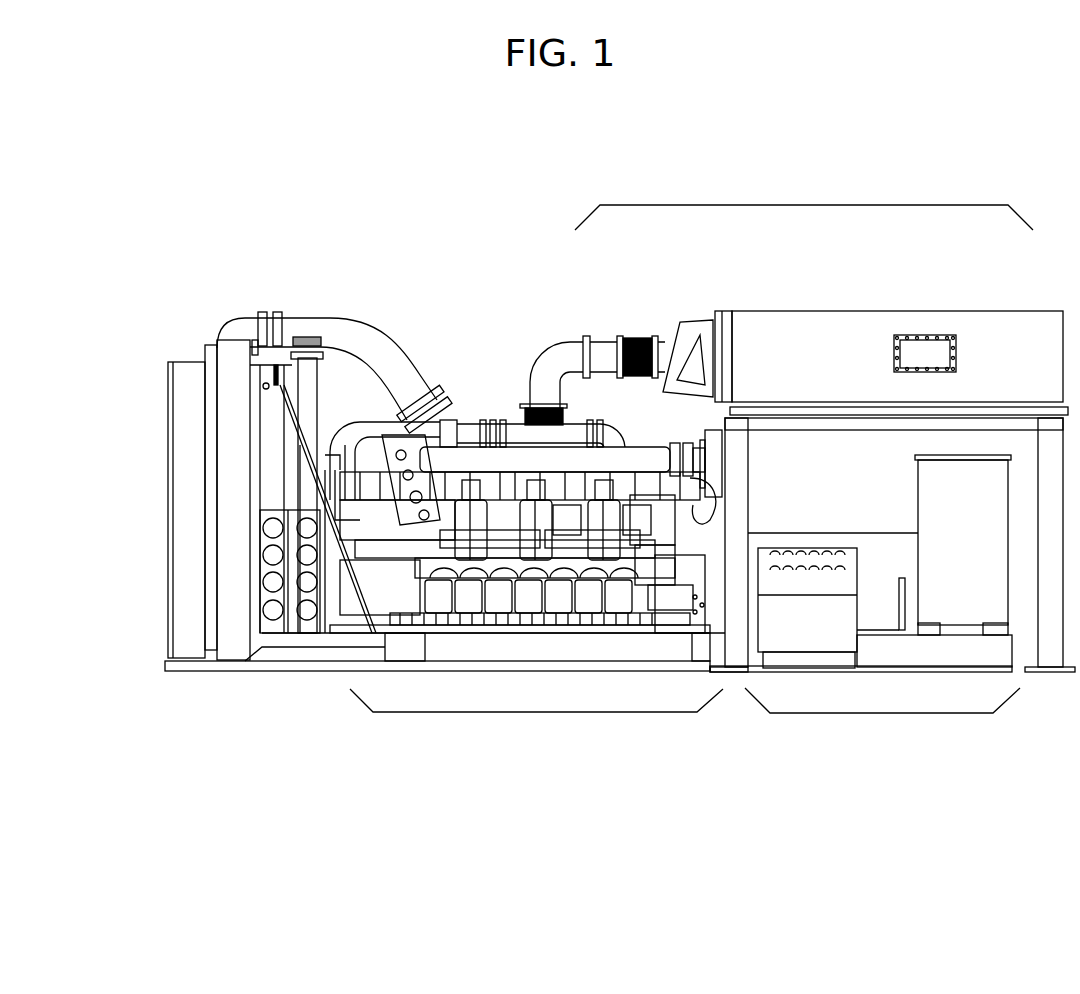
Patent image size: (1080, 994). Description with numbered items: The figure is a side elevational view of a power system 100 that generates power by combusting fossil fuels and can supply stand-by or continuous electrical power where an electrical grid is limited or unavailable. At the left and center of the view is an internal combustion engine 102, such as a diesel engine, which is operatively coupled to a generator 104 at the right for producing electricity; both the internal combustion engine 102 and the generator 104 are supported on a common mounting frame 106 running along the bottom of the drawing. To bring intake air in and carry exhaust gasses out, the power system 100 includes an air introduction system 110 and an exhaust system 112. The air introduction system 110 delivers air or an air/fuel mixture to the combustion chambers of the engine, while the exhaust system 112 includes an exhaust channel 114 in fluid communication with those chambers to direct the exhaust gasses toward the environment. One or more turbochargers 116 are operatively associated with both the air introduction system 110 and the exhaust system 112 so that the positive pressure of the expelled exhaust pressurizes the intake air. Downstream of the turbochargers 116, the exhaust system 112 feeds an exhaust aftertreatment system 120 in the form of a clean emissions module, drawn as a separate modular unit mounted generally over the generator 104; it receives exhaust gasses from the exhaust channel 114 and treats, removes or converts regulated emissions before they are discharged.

The power system 100 is at (488, 234).
The internal combustion engine 102 is at (538, 712).
The generator 104 is at (891, 713).
The common mounting frame 106 is at (285, 657).
The air introduction system 110 is at (650, 447).
The exhaust system 112 is at (815, 200).
The exhaust channel 114 is at (545, 350).
The turbocharger 116 is at (497, 447).
The exhaust aftertreatment system 120 is at (760, 296).